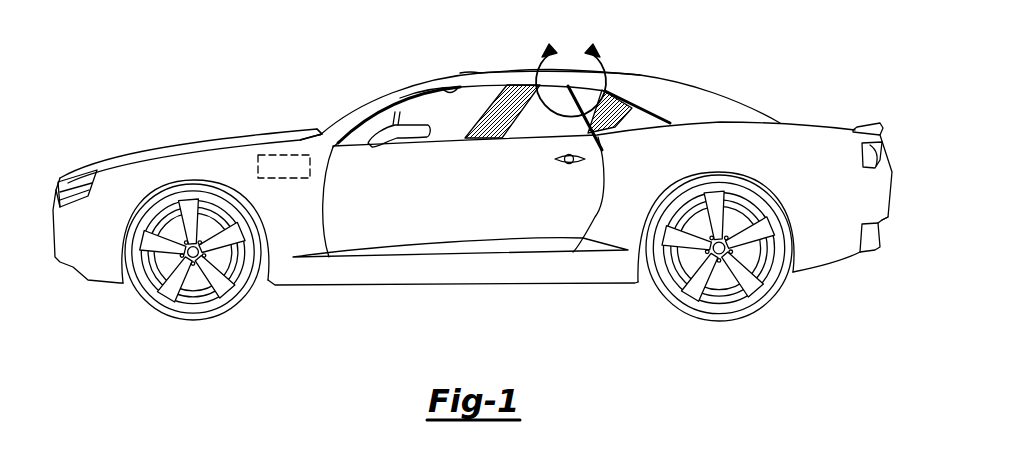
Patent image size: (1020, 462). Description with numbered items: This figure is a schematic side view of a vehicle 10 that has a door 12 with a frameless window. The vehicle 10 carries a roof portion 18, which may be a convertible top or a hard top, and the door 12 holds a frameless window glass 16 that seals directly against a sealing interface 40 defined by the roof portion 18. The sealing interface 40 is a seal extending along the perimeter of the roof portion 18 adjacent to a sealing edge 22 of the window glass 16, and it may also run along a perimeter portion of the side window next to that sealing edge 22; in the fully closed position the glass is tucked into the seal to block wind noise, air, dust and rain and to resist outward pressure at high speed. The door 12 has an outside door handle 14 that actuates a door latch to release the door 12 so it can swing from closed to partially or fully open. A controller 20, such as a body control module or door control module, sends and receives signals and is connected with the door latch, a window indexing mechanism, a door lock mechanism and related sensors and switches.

The vehicle 10 is at (472, 165).
The door 12 is at (428, 233).
The outside door handle 14 is at (566, 163).
The frameless window glass 16 is at (413, 107).
The roof portion 18 is at (523, 73).
The controller 20 is at (281, 168).
The sealing edge 22 is at (412, 108).
The sealing interface 40 is at (468, 82).